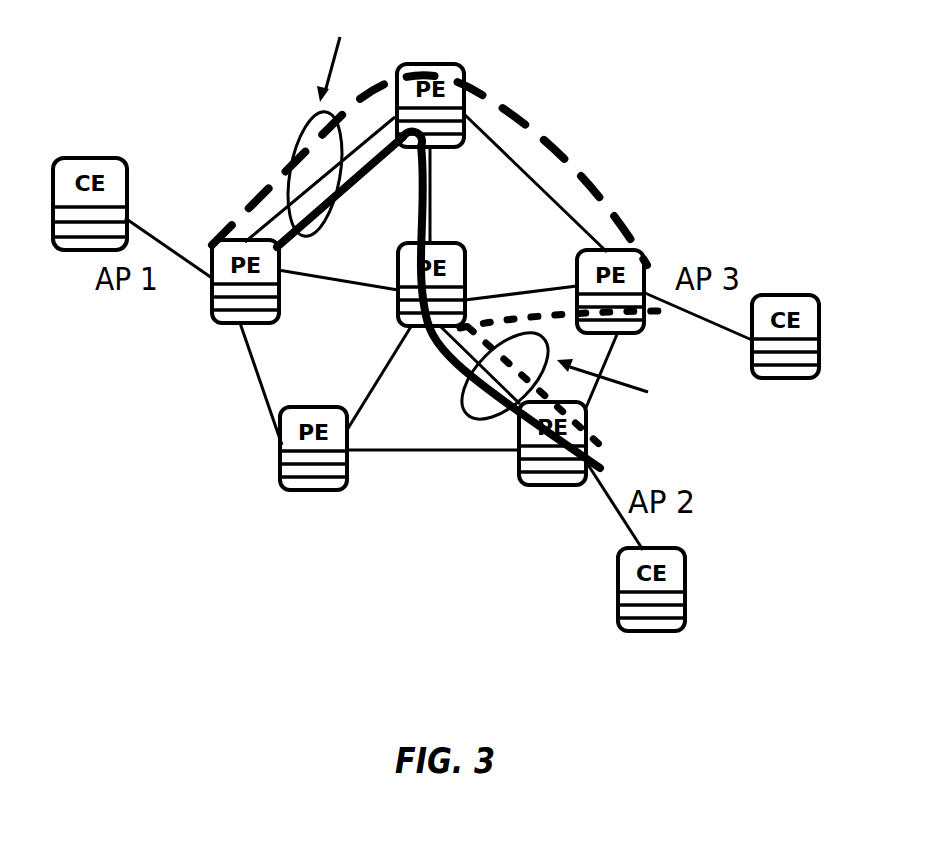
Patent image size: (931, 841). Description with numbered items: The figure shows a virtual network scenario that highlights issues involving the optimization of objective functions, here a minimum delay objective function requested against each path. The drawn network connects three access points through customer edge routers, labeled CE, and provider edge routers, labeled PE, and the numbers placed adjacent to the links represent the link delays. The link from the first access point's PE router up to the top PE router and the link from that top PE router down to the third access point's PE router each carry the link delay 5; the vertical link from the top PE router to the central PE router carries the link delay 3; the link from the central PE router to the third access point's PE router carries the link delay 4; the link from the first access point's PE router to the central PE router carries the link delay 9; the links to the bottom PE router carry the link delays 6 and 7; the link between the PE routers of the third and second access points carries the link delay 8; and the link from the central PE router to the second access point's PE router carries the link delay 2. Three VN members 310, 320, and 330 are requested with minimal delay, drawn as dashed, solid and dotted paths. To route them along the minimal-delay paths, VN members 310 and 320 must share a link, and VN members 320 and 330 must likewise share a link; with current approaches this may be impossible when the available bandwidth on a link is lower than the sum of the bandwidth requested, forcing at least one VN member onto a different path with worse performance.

The link delay 2 is at (477, 372).
The link delay 3 is at (447, 196).
The link delay 4 is at (521, 275).
The link delay 5 is at (423, 180).
The link delay 6 is at (255, 384).
The link delay 7 is at (433, 472).
The link delay 8 is at (613, 371).
The link delay 9 is at (338, 297).
The VN member 310 is at (578, 175).
The VN member 320 is at (418, 212).
The VN member 330 is at (597, 437).